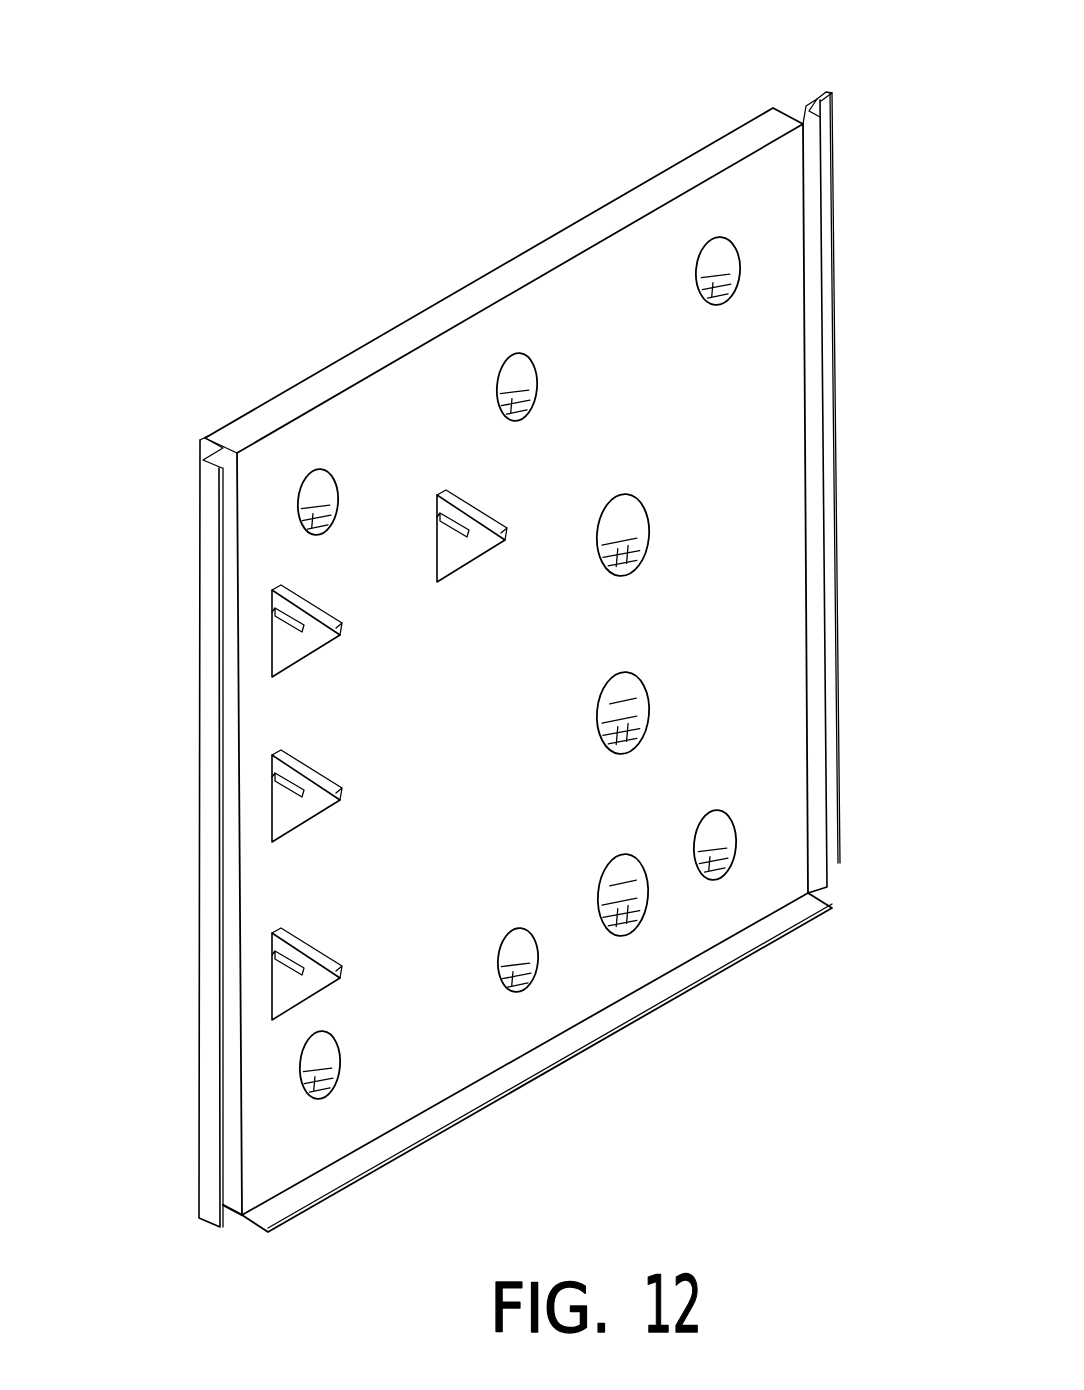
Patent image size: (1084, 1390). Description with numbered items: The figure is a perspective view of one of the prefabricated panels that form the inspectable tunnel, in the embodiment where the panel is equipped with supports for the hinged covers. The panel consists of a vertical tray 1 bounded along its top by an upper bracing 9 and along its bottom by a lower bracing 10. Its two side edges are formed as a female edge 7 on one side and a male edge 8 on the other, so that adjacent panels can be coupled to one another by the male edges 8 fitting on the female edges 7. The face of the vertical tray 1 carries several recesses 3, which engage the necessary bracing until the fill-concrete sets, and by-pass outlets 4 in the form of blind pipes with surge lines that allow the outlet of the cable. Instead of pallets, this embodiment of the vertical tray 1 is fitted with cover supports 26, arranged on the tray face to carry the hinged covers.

The vertical tray 1 is at (265, 567).
The recesses 3 is at (722, 262).
The by-pass outlets 4 is at (632, 697).
The female edge 7 is at (812, 100).
The male edge 8 is at (205, 446).
The upper bracing 9 is at (557, 250).
The lower bracing 10 is at (358, 1163).
The cover support 26 is at (293, 775).